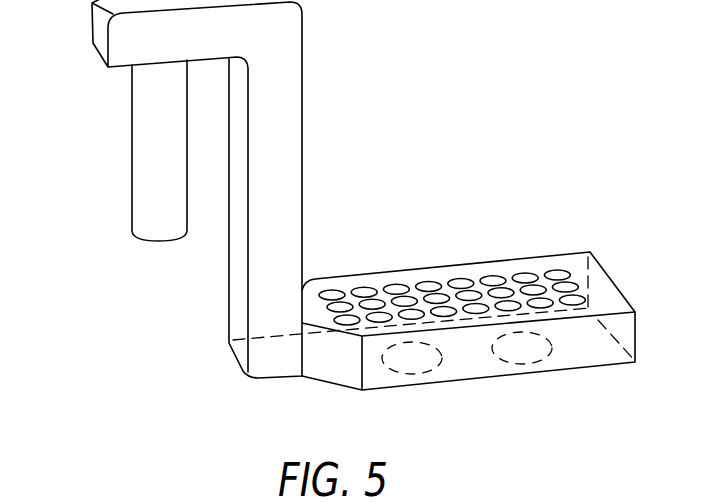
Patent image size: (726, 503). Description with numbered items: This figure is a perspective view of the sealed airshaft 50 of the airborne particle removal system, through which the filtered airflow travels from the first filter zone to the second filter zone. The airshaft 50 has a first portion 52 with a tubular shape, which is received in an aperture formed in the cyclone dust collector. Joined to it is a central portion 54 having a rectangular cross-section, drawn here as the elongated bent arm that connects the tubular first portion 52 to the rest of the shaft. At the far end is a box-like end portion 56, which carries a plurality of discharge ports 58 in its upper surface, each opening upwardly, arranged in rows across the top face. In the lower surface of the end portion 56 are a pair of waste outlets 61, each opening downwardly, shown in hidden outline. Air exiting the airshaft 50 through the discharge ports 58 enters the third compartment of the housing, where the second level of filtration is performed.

The sealed airshaft 50 is at (350, 223).
The first portion 52 is at (135, 188).
The central portion 54 is at (288, 168).
The box-like end portion 56 is at (578, 358).
The discharge ports 58 is at (563, 275).
The waste outlets 61 is at (502, 362).